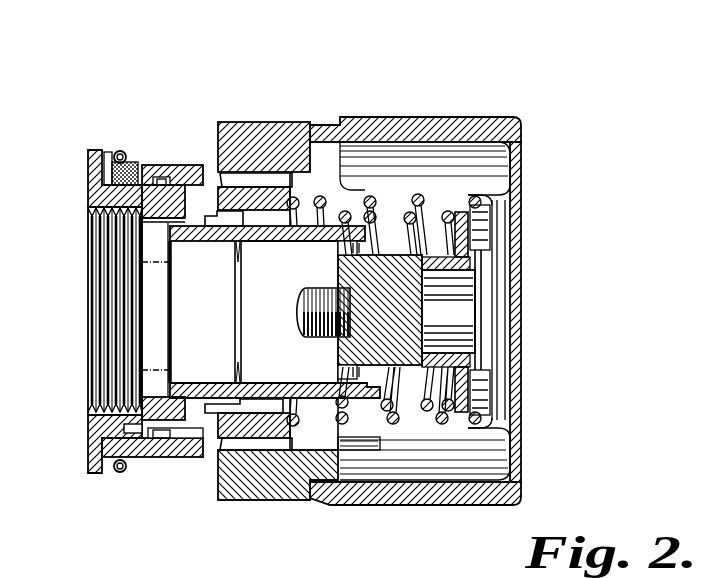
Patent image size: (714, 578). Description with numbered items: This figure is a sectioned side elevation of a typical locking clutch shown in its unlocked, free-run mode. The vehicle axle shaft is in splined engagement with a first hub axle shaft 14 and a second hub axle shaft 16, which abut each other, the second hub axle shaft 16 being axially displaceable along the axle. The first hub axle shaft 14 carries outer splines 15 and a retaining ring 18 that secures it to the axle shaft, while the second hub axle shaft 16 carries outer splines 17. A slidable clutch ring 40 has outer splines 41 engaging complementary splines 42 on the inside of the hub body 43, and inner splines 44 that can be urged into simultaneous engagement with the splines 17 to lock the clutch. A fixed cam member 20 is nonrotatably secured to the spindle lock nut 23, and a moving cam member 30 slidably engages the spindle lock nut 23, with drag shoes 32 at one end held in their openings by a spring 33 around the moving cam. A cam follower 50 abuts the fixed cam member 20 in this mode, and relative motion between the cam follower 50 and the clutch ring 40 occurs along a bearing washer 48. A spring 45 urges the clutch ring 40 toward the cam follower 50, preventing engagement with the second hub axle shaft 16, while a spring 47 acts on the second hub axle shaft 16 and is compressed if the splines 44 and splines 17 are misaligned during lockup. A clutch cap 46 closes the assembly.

The first hub axle shaft 14 is at (214, 292).
The splines 15 is at (210, 160).
The second hub axle shaft 16 is at (281, 292).
The splines 17 is at (308, 222).
The retaining ring 18 is at (182, 162).
The fixed cam member 20 is at (152, 445).
The spindle lock nut 23 is at (90, 152).
The moving cam member 30 is at (172, 460).
The drag shoes 32 is at (145, 165).
The spring 33 is at (118, 150).
The clutch ring 40 is at (258, 173).
The splines 41 is at (283, 215).
The complementary splines 42 is at (355, 172).
The hub body 43 is at (332, 128).
The splines 44 is at (268, 407).
The spring 45 is at (472, 196).
The clutch cap 46 is at (390, 507).
The spring 47 is at (403, 210).
The bearing washer 48 is at (214, 212).
The cam follower 50 is at (208, 440).